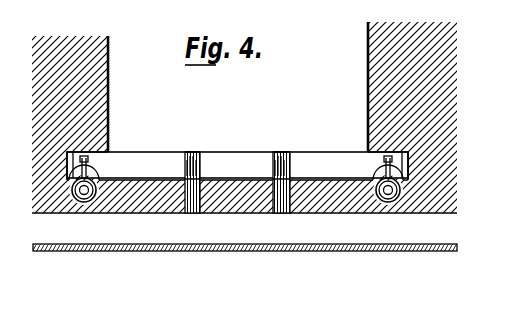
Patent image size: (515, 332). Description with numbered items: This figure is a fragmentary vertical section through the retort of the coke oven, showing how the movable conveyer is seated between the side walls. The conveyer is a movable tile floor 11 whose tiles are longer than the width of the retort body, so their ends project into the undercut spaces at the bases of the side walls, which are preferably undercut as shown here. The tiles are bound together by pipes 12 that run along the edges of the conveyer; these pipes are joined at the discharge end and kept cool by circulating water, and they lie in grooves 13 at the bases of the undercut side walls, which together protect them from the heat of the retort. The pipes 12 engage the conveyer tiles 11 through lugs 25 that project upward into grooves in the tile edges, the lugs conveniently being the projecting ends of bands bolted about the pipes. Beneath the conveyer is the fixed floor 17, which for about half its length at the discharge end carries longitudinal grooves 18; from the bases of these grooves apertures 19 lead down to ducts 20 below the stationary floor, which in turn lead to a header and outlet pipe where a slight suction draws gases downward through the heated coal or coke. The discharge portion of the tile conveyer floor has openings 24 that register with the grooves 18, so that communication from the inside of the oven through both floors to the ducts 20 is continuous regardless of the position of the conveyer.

The movable tile floor 11 is at (242, 164).
The pipes 12 is at (77, 199).
The grooves 13 is at (410, 163).
The fixed floor 17 is at (233, 208).
The longitudinal grooves 18 is at (181, 178).
The apertures 19 is at (193, 215).
The ducts 20 is at (118, 235).
The openings 24 is at (198, 152).
The lugs 25 is at (98, 150).